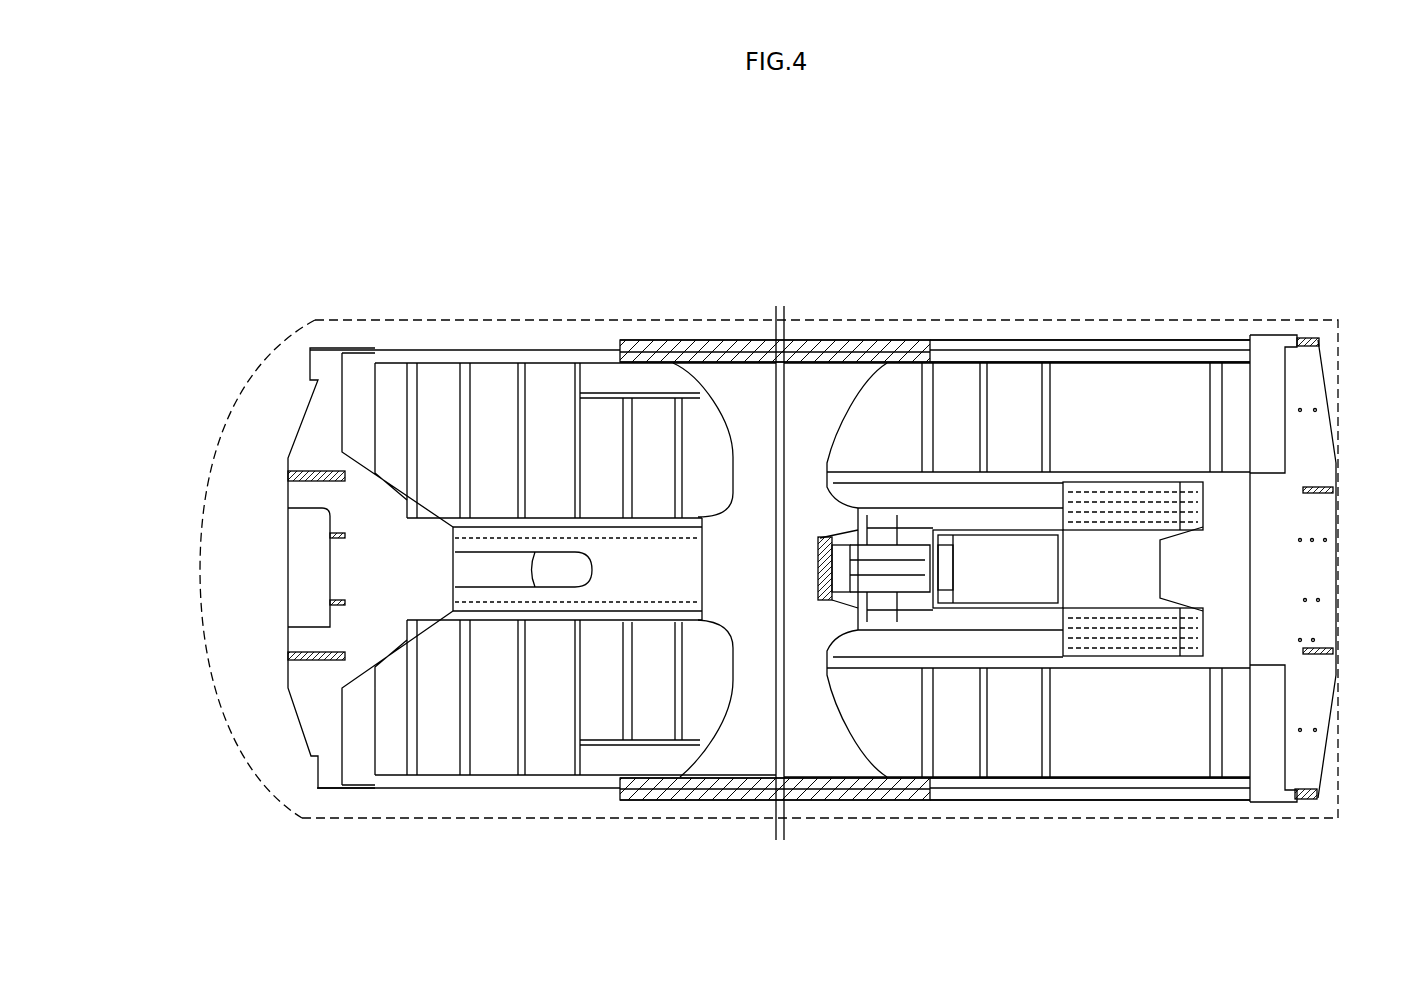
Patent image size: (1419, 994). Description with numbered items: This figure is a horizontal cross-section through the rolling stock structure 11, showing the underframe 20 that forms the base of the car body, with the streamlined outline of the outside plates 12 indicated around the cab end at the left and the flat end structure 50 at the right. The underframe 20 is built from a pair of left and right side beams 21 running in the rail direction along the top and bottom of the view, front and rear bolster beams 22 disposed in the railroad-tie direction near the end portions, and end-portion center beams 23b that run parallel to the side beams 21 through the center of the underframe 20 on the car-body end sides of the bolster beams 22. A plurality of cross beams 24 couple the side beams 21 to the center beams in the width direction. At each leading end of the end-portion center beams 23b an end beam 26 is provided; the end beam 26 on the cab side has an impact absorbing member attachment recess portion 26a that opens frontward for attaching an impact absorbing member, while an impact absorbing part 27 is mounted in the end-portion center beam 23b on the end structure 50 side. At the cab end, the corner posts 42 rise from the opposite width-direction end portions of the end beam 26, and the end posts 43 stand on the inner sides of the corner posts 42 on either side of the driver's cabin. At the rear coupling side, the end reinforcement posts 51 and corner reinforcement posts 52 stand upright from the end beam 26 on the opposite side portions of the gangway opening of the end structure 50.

The rolling stock structure 11 is at (784, 226).
The outside plate 12 is at (230, 417).
The underframe 20 is at (1055, 328).
The side beam 21 is at (980, 340).
The bolster beam 22 is at (722, 705).
The end-portion center beam 23b is at (612, 508).
The cross beam 24 is at (518, 458).
The end beam 26 is at (367, 795).
The impact absorbing member attachment recess portion 26a is at (327, 608).
The impact absorbing part 27 is at (1135, 668).
The corner post 42 is at (322, 792).
The end post 43 is at (311, 667).
The end structure 50 is at (1340, 372).
The end reinforcement post 51 is at (1318, 487).
The corner reinforcement post 52 is at (1307, 338).